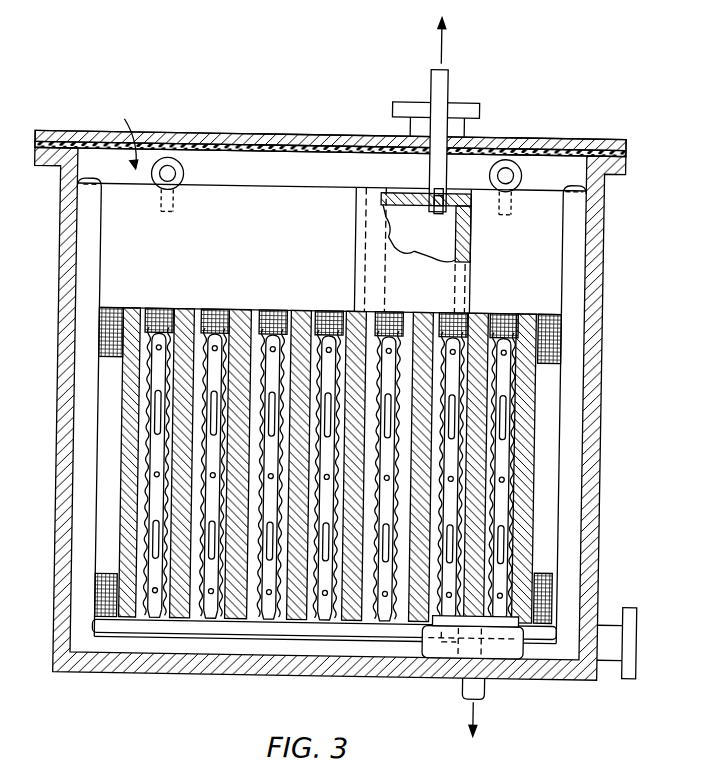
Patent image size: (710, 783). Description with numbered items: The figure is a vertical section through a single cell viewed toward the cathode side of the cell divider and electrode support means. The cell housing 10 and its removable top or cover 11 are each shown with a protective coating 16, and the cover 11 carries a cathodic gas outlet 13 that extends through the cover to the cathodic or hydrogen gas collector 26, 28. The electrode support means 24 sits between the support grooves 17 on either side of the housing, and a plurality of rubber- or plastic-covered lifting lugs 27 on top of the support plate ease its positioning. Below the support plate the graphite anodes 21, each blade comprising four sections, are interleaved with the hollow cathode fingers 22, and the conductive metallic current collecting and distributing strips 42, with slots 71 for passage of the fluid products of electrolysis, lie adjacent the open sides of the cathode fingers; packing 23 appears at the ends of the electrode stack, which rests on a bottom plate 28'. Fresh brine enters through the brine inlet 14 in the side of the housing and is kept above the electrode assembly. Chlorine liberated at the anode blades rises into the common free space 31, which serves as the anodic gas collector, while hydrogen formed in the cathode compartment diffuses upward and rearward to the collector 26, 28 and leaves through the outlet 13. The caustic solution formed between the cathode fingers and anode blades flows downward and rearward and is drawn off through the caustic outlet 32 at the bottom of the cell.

The cell housing 10 is at (58, 585).
The removable top or cover 11 is at (276, 134).
The cathodic gas outlet 13 is at (427, 79).
The brine inlet 14 is at (624, 645).
The protective coating 16 is at (228, 152).
The support grooves 17 is at (88, 280).
The anodes 21 is at (130, 433).
The cathode fingers 22 is at (271, 313).
The packing 23 is at (107, 325).
The electrode support means 24 is at (151, 263).
The cathodic gas collector 26 is at (407, 282).
The lifting lugs 27 is at (518, 174).
The cathodic gas collector 28 is at (330, 298).
The bottom tray plate 28' is at (324, 642).
The free space 31 is at (120, 140).
The caustic drain fitting 32 is at (488, 695).
The conductive metallic current collecting and distributing strips 42 is at (500, 380).
The slots 71 is at (160, 409).